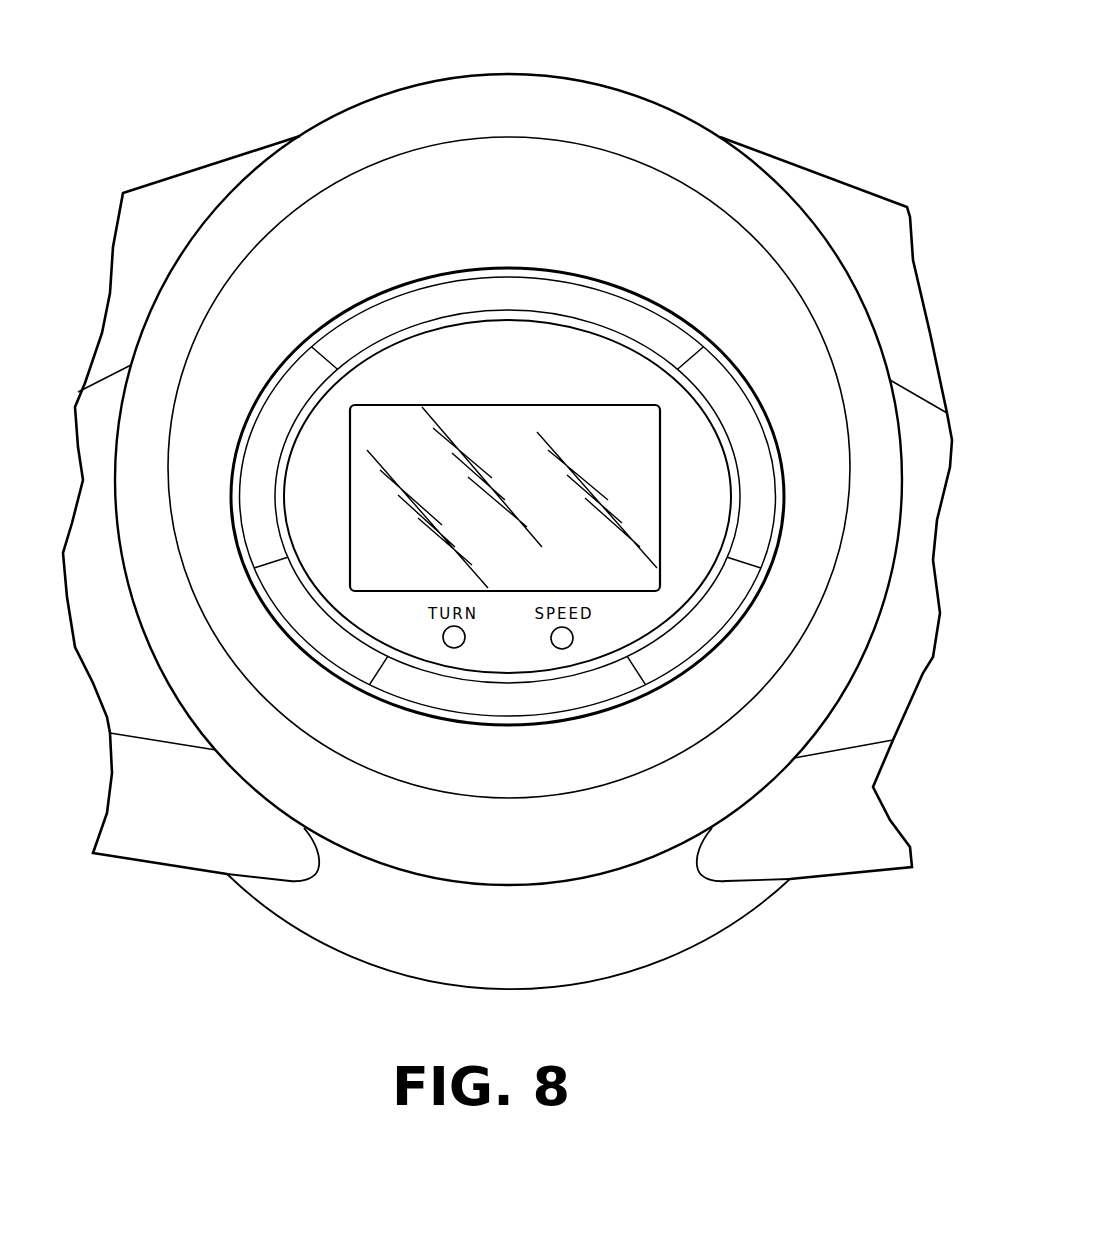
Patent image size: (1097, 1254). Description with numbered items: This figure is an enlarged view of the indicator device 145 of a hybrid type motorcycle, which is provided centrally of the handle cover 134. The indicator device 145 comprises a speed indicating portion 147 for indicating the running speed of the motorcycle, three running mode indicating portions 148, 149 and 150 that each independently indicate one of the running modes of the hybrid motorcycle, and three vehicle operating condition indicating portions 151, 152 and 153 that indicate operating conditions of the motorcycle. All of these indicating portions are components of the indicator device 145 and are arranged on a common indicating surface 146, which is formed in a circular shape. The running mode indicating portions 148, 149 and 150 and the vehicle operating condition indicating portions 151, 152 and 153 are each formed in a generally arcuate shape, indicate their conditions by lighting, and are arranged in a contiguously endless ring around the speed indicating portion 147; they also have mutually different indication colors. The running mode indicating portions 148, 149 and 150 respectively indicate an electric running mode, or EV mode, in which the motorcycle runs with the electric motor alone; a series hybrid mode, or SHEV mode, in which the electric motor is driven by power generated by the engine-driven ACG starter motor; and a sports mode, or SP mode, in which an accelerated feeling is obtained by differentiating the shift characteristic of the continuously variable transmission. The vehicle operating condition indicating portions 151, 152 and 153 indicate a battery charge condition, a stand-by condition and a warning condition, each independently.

The handle cover 134 is at (847, 200).
The indicator device 145 is at (684, 114).
The indicating surface 146 is at (472, 157).
The speed indicating portion 147 is at (545, 410).
The running mode indicating portion 148 is at (675, 660).
The running mode indicating portion 149 is at (590, 305).
The running mode indicating portion 150 is at (325, 655).
The vehicle operating condition indicating portion 151 is at (292, 388).
The vehicle operating condition indicating portion 152 is at (714, 386).
The vehicle operating condition indicating portion 153 is at (402, 700).